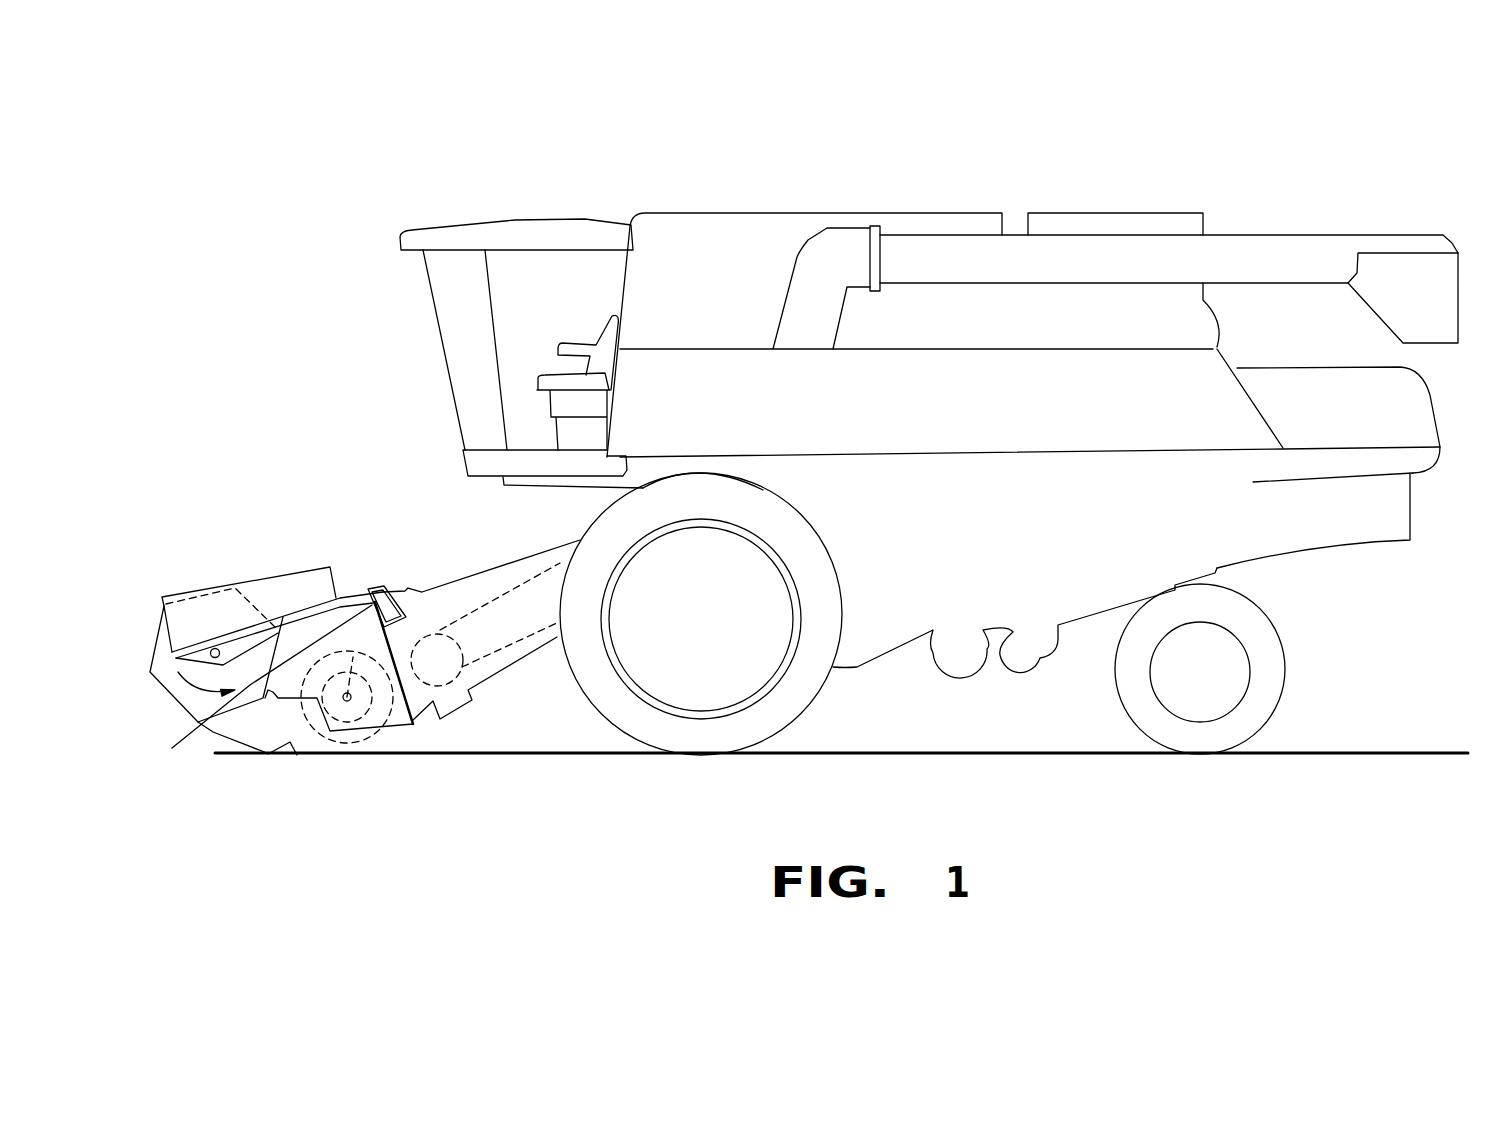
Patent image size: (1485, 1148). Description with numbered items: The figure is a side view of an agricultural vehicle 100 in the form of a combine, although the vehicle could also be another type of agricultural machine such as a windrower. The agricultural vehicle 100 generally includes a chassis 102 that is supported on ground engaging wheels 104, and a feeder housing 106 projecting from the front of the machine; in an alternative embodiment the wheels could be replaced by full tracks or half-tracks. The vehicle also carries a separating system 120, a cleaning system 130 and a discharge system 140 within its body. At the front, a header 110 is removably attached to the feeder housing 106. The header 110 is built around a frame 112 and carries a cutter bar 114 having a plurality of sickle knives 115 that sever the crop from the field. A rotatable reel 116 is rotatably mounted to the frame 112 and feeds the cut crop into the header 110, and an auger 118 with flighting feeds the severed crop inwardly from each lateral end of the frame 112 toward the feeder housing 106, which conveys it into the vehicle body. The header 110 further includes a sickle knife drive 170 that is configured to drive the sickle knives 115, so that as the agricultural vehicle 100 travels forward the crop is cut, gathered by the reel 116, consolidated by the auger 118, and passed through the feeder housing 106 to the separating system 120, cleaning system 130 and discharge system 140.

The agricultural vehicle 100 is at (783, 459).
The chassis 102 is at (1225, 577).
The ground engaging wheels 104 is at (590, 697).
The feeder housing 106 is at (465, 575).
The header 110 is at (296, 641).
The frame 112 is at (402, 738).
The cutter bar 114 is at (208, 748).
The sickle knives 115 is at (178, 749).
The rotatable reel 116 is at (156, 642).
The auger 118 is at (348, 725).
The separating system 120 is at (586, 505).
The cleaning system 130 is at (916, 682).
The discharge system 140 is at (1377, 568).
The sickle knife drive 170 is at (384, 591).